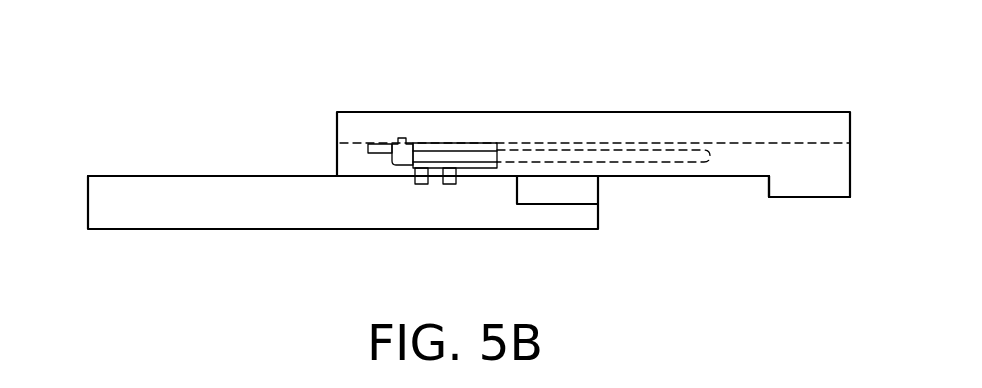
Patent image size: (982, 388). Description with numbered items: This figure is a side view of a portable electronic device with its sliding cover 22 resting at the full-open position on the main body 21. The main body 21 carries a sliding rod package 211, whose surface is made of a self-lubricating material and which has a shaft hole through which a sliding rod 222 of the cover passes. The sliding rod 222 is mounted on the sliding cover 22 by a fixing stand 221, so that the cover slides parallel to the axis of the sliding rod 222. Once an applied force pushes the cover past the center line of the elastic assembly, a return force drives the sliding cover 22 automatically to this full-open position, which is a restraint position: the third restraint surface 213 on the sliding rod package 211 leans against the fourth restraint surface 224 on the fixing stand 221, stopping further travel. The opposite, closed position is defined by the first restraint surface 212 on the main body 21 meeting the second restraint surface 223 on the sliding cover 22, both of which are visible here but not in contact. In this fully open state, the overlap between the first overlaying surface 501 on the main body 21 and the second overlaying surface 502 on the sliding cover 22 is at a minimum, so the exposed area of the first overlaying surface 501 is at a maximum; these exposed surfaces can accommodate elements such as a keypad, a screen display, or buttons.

The main body 21 is at (191, 231).
The sliding cover 22 is at (805, 110).
The sliding rod package 211 is at (482, 141).
The first restraint surface 212 is at (518, 190).
The third restraint surface 213 is at (443, 142).
The fixing stand 221 is at (365, 147).
The sliding rod 222 is at (641, 141).
The second restraint surface 223 is at (768, 190).
The fourth restraint surface 224 is at (393, 142).
The first overlaying surface 501 is at (195, 175).
The second overlaying surface 502 is at (653, 178).